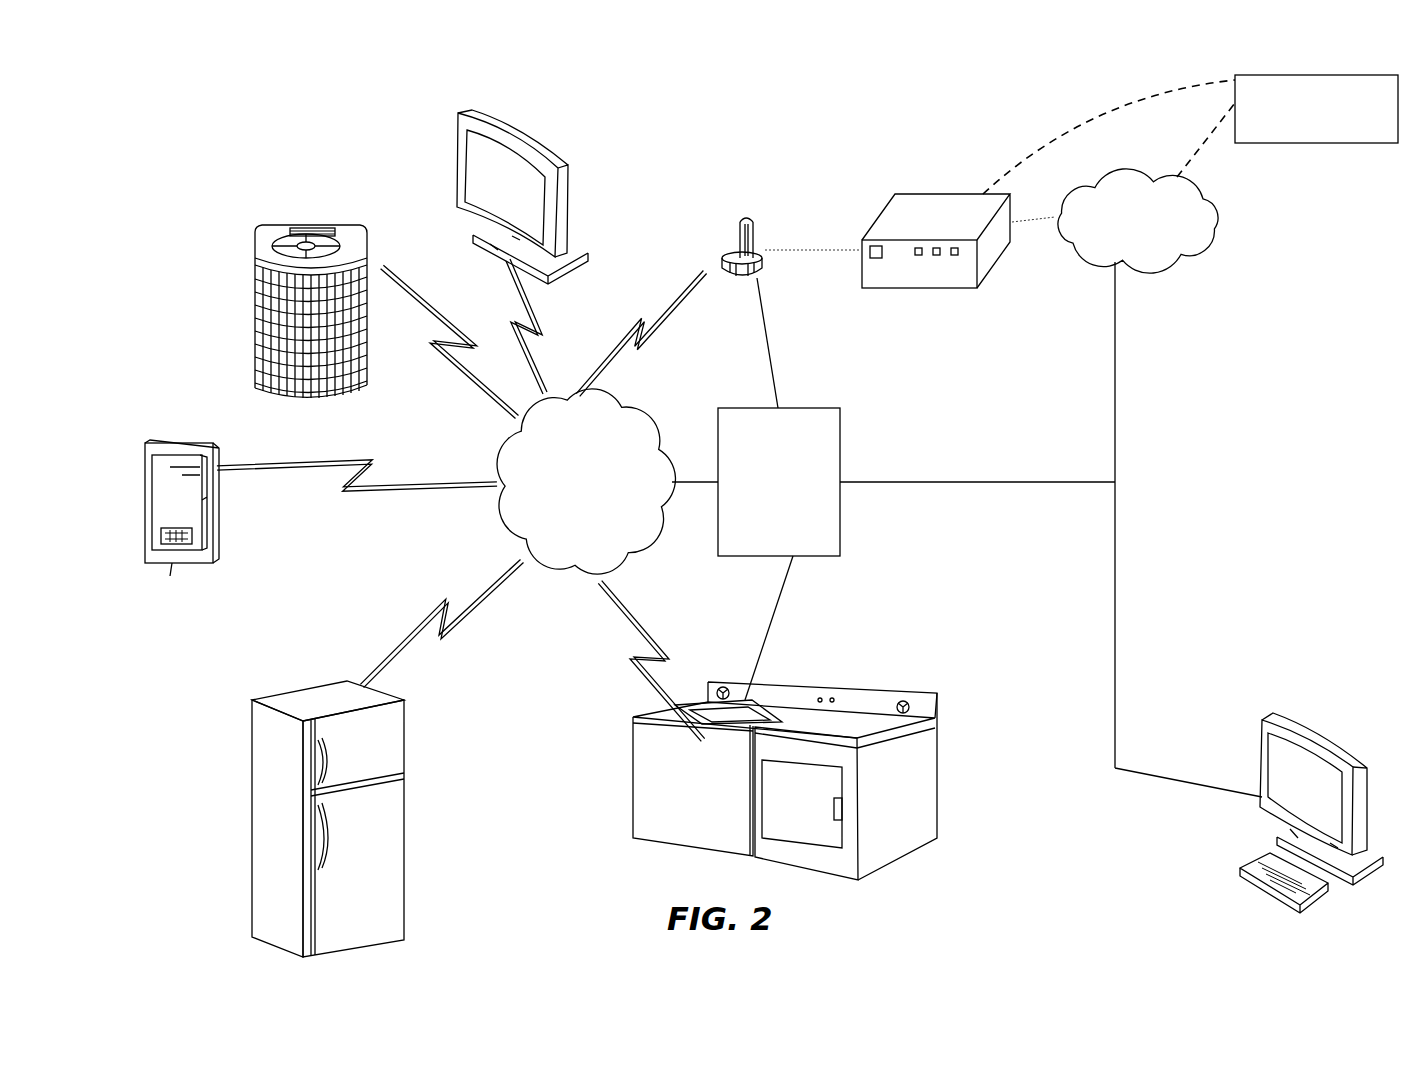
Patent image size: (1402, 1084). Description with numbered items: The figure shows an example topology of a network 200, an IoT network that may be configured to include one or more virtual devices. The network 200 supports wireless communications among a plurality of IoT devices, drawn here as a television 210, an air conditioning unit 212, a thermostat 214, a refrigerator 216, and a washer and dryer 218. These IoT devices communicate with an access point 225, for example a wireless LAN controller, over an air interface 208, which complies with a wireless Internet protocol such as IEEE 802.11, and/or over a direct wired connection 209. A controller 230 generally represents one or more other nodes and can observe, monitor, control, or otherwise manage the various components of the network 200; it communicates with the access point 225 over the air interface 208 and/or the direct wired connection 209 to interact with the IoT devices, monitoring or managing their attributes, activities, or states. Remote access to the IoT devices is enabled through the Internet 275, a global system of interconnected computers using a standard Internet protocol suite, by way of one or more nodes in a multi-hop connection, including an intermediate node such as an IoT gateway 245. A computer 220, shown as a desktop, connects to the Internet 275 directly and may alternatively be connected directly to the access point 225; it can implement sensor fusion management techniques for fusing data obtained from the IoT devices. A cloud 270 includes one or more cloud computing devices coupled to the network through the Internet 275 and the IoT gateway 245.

The network 200 is at (219, 106).
The air interface 208 is at (648, 405).
The direct wired connection 209 is at (770, 338).
The television 210 is at (514, 124).
The air conditioning unit 212 is at (334, 222).
The thermostat 214 is at (188, 443).
The refrigerator 216 is at (300, 690).
The washer and dryer 218 is at (902, 680).
The computer 220 is at (1312, 725).
The access point 225 is at (817, 407).
The controller 230 is at (752, 185).
The IoT gateway 245 is at (938, 285).
The cloud 270 is at (1334, 146).
The Internet 275 is at (1179, 263).